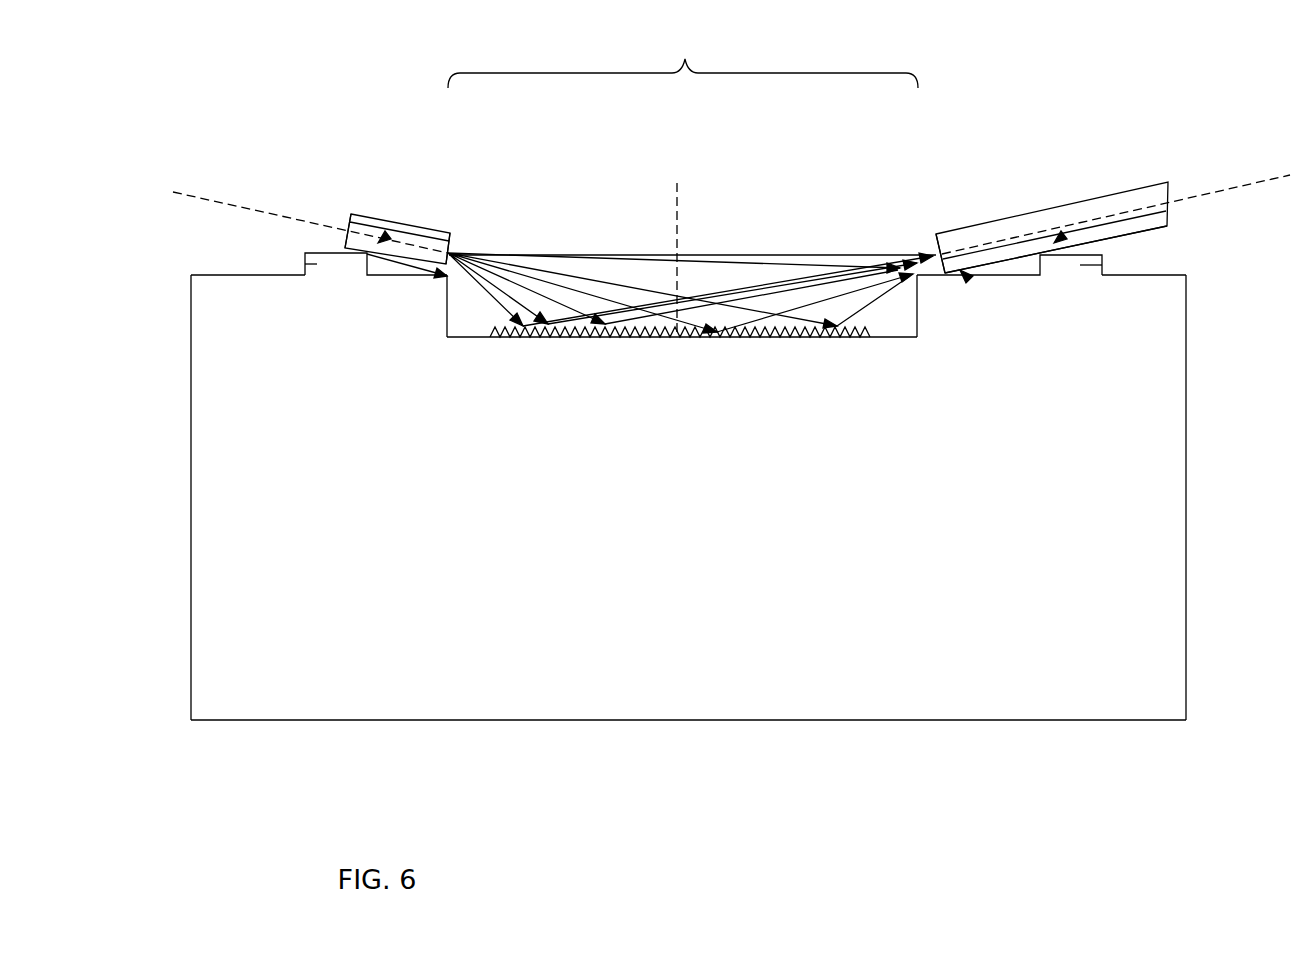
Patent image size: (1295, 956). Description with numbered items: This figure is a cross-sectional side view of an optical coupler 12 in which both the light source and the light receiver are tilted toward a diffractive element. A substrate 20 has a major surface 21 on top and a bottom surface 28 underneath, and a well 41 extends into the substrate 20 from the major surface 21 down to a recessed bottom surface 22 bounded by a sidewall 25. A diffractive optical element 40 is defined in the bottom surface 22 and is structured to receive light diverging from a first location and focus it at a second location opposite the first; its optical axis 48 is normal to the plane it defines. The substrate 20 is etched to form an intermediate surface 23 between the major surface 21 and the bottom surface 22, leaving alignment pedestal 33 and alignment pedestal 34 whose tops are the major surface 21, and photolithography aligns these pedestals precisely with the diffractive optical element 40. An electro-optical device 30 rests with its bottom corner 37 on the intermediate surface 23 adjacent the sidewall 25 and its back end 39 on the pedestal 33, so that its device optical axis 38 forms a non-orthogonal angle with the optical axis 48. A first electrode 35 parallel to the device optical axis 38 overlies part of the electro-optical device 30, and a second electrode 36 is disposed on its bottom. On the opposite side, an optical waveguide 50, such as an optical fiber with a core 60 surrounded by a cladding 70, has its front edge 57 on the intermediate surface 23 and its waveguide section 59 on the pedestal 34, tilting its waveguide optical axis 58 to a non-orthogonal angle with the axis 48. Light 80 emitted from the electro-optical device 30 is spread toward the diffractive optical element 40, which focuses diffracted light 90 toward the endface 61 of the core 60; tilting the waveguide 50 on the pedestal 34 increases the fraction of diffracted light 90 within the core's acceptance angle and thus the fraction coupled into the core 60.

The optical coupler 12 is at (693, 778).
The substrate 20 is at (993, 688).
The major surface 21 is at (340, 262).
The bottom surface 22 is at (887, 338).
The intermediate surface 23 is at (255, 280).
The sidewall 25 is at (445, 300).
The bottom surface of substrate 28 is at (348, 715).
The electro-optical device 30 is at (412, 234).
The alignment pedestal 33 is at (317, 264).
The alignment pedestal 34 is at (1080, 265).
The first electrode 35 is at (442, 233).
The second electrode 36 is at (343, 250).
The bottom corner 37 is at (450, 280).
The device optical axis 38 is at (203, 197).
The back end 39 is at (385, 236).
The diffractive optical element 40 is at (645, 340).
The well 41 is at (683, 53).
The optical axis of diffractive optical element 48 is at (677, 217).
The optical waveguide 50 is at (1058, 178).
The front edge 57 is at (965, 275).
The waveguide optical axis 58 is at (1203, 193).
The waveguide section 59 is at (1060, 236).
The core 60 is at (1090, 217).
The endface 61 is at (942, 256).
The cladding 70 is at (960, 233).
The emitted light 80 is at (520, 205).
The diffracted light 90 is at (827, 268).